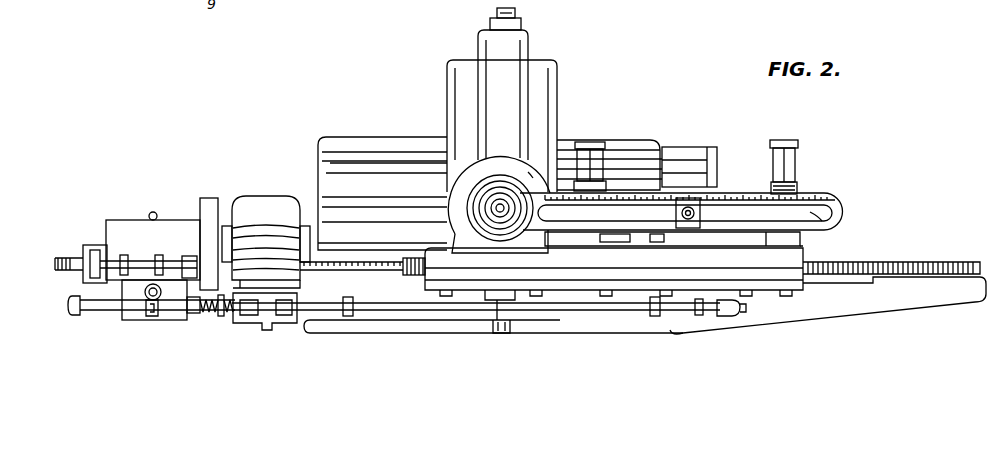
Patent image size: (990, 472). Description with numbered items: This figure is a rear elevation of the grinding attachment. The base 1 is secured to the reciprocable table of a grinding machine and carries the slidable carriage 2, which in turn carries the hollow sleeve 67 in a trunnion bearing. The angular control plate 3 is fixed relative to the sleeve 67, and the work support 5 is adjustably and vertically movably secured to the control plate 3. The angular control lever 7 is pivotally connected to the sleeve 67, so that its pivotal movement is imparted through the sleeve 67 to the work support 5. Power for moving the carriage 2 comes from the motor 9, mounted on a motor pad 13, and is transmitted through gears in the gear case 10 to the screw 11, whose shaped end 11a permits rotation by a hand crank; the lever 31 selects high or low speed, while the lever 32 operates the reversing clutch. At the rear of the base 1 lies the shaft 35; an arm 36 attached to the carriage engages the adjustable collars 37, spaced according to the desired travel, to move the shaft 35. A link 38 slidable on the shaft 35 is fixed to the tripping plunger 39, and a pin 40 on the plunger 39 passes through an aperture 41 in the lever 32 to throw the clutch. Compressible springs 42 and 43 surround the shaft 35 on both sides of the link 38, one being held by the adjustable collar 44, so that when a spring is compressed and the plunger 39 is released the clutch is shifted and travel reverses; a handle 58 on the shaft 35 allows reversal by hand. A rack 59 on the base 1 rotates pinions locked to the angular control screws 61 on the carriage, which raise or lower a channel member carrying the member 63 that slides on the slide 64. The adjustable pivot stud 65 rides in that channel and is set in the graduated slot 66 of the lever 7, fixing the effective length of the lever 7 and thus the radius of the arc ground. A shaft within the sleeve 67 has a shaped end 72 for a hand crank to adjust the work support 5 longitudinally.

The base 1 is at (830, 305).
The slidable carriage 2 is at (470, 262).
The angular control plate 3 is at (447, 86).
The work support 5 is at (342, 137).
The angular control lever 7 is at (843, 207).
The motor 9 is at (240, 210).
The gear case 10 is at (120, 222).
The screw 11 is at (308, 222).
The end of the shaft 11a is at (62, 262).
The motor pad 13 is at (274, 326).
The lever 31 is at (154, 212).
The lever 32 is at (130, 320).
The shaft 35 is at (560, 311).
The arm 36 is at (518, 333).
The adjustable collars 37 is at (346, 317).
The link 38 is at (222, 322).
The tripping plunger 39 is at (192, 322).
The pin 40 is at (142, 322).
The aperture 41 is at (165, 320).
The compressible spring 42 is at (215, 320).
The compressible spring 43 is at (232, 322).
The adjustable collar 44 is at (178, 290).
The handle 58 is at (70, 305).
The rack 59 is at (932, 262).
The angular control screws 61 is at (591, 150).
The member 63 is at (705, 180).
The slide 64 is at (700, 150).
The adjustable pivot stud 65 is at (720, 194).
The slot 66 is at (824, 229).
The hollow sleeve 67 is at (533, 178).
The shaped end 72 is at (503, 210).